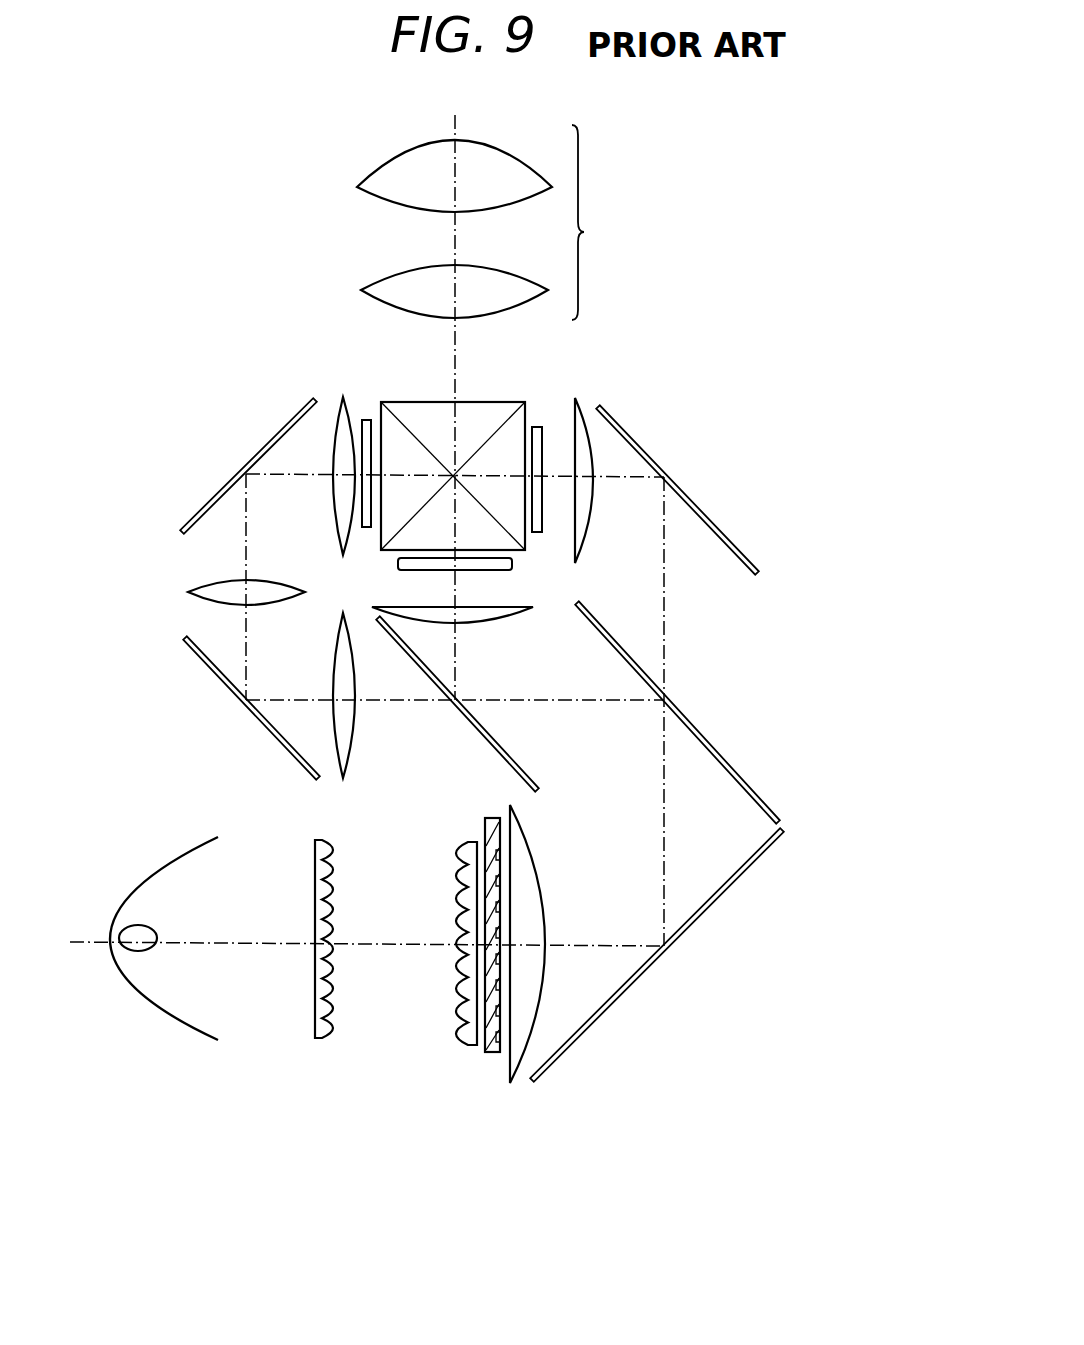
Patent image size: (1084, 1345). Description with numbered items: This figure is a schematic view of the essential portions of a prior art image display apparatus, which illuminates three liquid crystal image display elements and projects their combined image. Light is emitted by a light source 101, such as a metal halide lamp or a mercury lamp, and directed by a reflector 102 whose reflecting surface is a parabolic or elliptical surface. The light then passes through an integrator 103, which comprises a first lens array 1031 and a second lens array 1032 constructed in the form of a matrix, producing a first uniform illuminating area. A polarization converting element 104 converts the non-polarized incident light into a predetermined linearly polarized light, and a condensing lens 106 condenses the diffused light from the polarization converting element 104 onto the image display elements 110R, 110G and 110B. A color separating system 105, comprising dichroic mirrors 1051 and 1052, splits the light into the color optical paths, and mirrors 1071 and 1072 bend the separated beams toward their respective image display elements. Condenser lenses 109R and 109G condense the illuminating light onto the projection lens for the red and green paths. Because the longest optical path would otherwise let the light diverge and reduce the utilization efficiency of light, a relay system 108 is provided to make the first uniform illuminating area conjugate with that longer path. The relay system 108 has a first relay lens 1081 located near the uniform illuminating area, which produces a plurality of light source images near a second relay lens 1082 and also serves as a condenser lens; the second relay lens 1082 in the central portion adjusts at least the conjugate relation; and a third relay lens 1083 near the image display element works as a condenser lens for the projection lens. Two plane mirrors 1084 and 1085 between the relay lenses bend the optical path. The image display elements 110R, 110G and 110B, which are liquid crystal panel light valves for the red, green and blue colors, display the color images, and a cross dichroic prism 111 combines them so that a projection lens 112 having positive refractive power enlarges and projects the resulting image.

The light source 101 is at (122, 953).
The reflector 102 is at (170, 1017).
The integrator 103 is at (396, 990).
The first lens array 1031 is at (322, 1040).
The second lens array 1032 is at (460, 1045).
The polarization converting element 104 is at (487, 1062).
The color separating system 105 is at (790, 648).
The dichroic mirror 1051 is at (745, 778).
The dichroic mirror 1052 is at (500, 748).
The condensing lens 106 is at (518, 1082).
The mirror 1071 is at (690, 932).
The mirror 1072 is at (723, 532).
The relay system 108 is at (170, 594).
The first relay lens 1081 is at (355, 737).
The second relay lens 1082 is at (282, 580).
The third relay lens 1083 is at (343, 397).
The plane mirror 1084 is at (260, 717).
The plane mirror 1085 is at (276, 430).
The condenser lens 109R is at (587, 398).
The condenser lens 109G is at (500, 623).
The image display element 110R is at (543, 435).
The image display element 110G is at (505, 568).
The image display element 110B is at (370, 420).
The cross dichroic prism 111 is at (508, 403).
The projection lens 112 is at (493, 222).